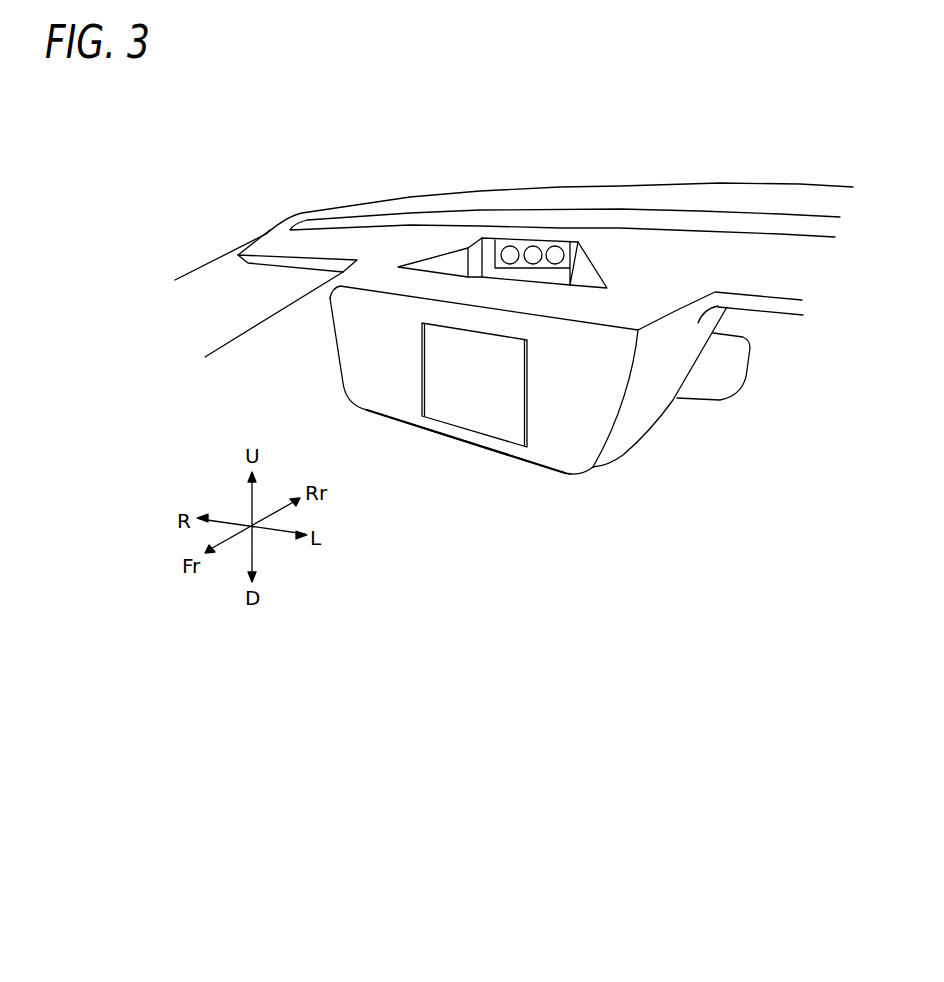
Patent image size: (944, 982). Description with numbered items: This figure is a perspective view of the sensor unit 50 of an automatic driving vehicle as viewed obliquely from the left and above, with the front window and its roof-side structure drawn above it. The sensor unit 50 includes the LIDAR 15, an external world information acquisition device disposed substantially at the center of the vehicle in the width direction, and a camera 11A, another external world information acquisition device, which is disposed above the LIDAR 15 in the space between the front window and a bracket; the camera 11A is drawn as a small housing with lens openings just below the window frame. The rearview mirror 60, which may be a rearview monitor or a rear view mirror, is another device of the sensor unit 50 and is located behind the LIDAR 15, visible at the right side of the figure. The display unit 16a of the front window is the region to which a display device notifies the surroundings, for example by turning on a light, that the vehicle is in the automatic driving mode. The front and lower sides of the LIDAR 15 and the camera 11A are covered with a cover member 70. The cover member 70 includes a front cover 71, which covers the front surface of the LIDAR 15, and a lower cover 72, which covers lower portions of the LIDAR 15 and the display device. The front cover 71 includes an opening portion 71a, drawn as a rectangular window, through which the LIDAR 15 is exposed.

The camera 11A is at (523, 238).
The display unit 16a is at (652, 208).
The rearview mirror 60 is at (720, 370).
The cover member 70 is at (620, 458).
The front cover 71 is at (533, 452).
The opening portion 71a is at (423, 370).
The lower cover 72 is at (630, 425).
The LIDAR 15 is at (470, 407).
The sensor unit 50 is at (486, 450).